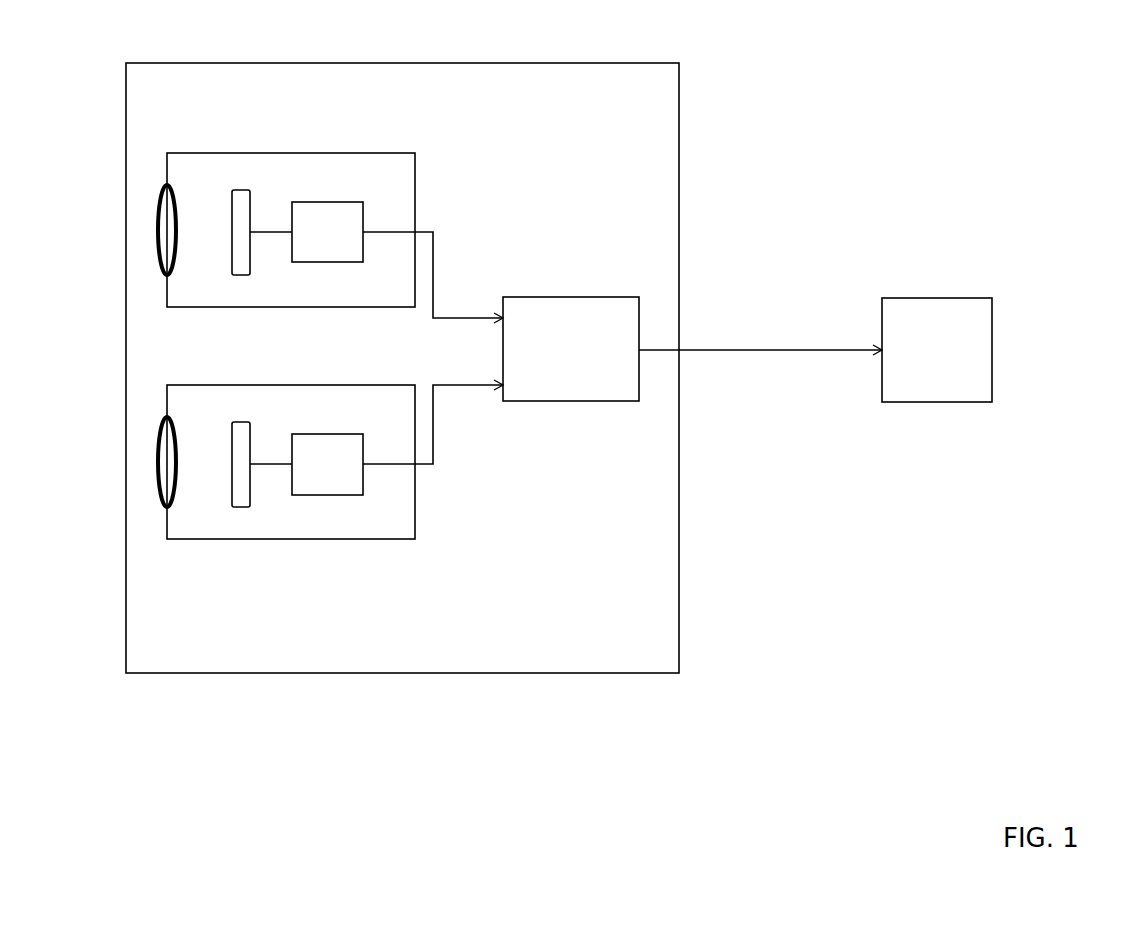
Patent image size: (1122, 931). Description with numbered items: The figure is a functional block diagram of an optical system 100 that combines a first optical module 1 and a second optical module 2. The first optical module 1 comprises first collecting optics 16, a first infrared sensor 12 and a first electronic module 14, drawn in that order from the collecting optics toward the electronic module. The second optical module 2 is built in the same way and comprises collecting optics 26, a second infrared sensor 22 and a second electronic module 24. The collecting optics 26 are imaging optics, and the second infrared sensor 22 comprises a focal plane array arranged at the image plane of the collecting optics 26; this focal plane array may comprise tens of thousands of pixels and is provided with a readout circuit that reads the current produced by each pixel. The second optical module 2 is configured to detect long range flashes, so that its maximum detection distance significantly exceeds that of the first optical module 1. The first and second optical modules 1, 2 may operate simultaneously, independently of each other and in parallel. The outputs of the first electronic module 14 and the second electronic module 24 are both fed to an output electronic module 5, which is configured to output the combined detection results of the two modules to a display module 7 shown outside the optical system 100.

The optical system 100 is at (643, 62).
The first optical module 1 is at (400, 152).
The second optical module 2 is at (344, 385).
The first infrared sensor 12 is at (237, 190).
The first electronic module 14 is at (335, 202).
The first collecting optics 16 is at (158, 220).
The second infrared sensor 22 is at (240, 507).
The second electronic module 24 is at (337, 495).
The collecting optics 26 is at (158, 473).
The output electronic module 5 is at (582, 297).
The display module 7 is at (917, 298).